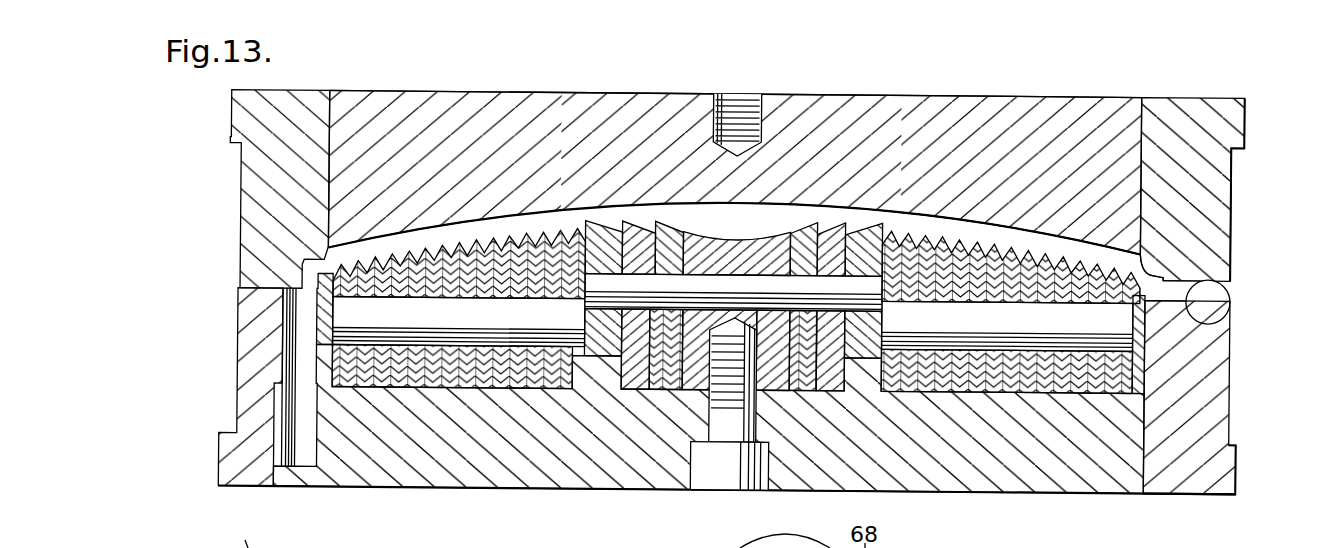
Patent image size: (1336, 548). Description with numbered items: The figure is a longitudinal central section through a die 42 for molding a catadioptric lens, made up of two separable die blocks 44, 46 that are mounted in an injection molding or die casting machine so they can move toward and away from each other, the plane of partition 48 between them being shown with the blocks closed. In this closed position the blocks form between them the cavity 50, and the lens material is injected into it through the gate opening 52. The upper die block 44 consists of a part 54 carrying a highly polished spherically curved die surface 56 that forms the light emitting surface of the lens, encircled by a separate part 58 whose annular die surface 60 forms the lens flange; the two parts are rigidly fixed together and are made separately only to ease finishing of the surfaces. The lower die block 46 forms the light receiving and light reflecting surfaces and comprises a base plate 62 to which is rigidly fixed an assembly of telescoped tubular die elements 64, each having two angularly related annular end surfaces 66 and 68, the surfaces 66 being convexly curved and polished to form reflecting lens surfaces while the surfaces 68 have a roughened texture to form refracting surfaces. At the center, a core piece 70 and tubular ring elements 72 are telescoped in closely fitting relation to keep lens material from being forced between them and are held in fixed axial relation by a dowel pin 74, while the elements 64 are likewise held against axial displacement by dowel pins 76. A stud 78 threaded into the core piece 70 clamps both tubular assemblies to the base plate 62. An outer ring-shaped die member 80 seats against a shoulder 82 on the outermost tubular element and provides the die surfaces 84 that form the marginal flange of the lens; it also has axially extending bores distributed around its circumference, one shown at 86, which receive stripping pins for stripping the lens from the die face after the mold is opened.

The die 42 is at (1005, 88).
The die block 44 is at (1200, 112).
The die block 46 is at (1185, 490).
The plane of partition 48 is at (260, 290).
The cavity 50 is at (765, 206).
The gate opening 52 is at (1215, 278).
The part 54 is at (905, 114).
The spherically curved die surface 56 is at (925, 218).
The separate part 58 is at (1205, 205).
The annular die surface 60 is at (1150, 268).
The base plate 62 is at (1006, 490).
The tubular die elements 64 is at (520, 390).
The annular end surface 66 is at (542, 232).
The annular end surface 68 is at (513, 232).
The central core piece 70 is at (738, 242).
The tubular ring elements 72 is at (866, 240).
The dowel pin 74 is at (650, 280).
The dowel pins 76 is at (452, 333).
The stud 78 is at (722, 478).
The ring-shaped die member 80 is at (1228, 392).
The shoulder 82 is at (1146, 370).
The die surfaces 84 is at (1168, 290).
The bore 86 is at (295, 462).